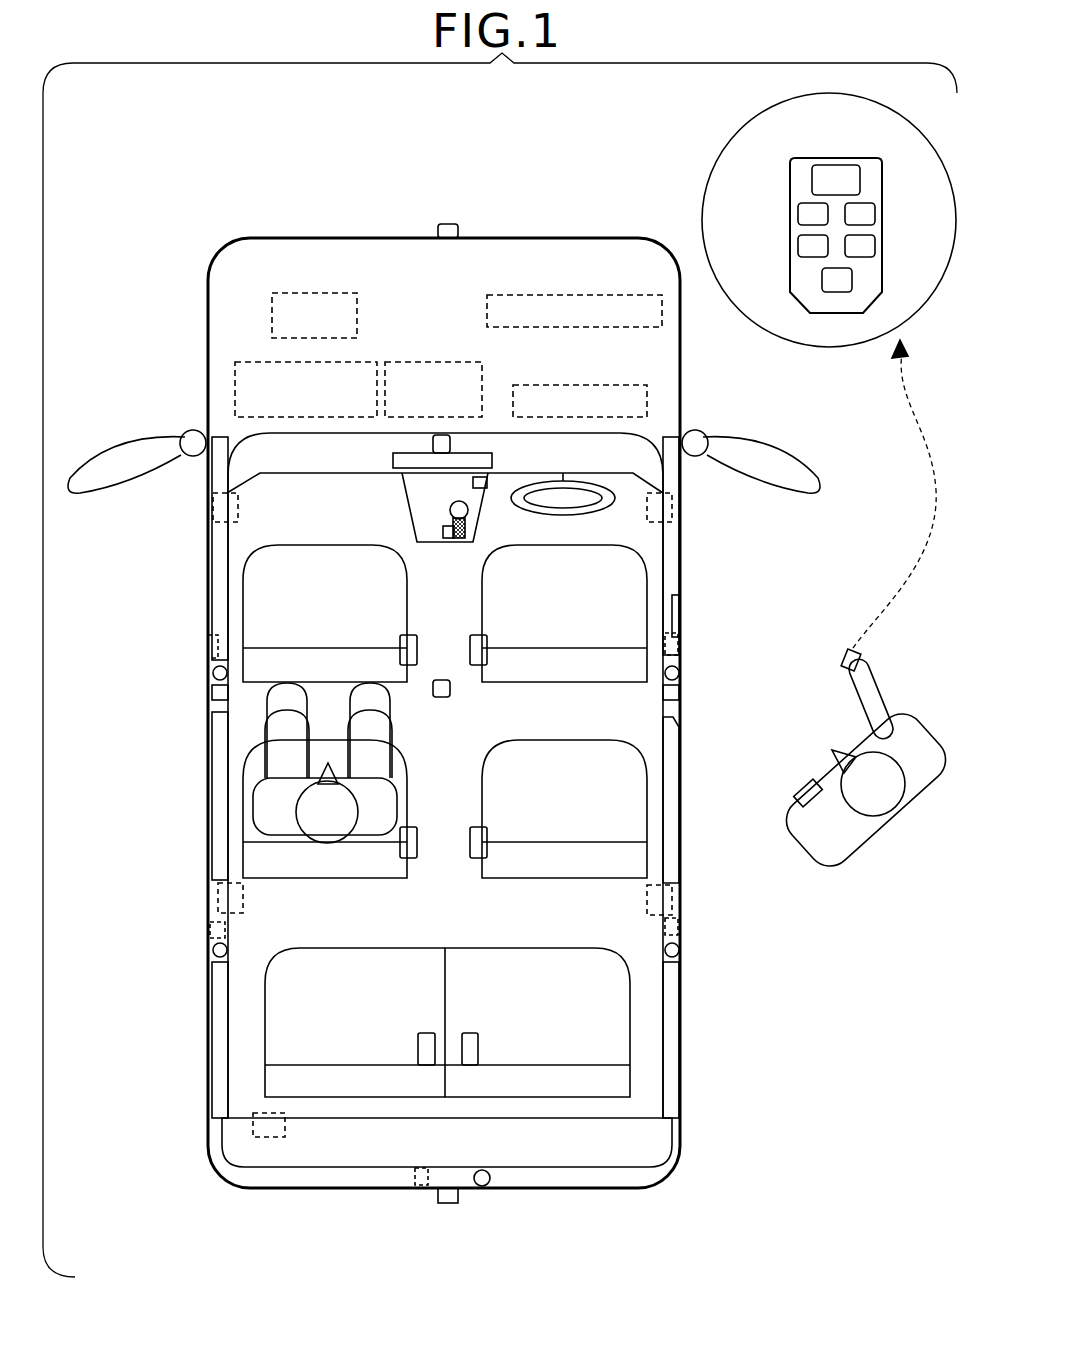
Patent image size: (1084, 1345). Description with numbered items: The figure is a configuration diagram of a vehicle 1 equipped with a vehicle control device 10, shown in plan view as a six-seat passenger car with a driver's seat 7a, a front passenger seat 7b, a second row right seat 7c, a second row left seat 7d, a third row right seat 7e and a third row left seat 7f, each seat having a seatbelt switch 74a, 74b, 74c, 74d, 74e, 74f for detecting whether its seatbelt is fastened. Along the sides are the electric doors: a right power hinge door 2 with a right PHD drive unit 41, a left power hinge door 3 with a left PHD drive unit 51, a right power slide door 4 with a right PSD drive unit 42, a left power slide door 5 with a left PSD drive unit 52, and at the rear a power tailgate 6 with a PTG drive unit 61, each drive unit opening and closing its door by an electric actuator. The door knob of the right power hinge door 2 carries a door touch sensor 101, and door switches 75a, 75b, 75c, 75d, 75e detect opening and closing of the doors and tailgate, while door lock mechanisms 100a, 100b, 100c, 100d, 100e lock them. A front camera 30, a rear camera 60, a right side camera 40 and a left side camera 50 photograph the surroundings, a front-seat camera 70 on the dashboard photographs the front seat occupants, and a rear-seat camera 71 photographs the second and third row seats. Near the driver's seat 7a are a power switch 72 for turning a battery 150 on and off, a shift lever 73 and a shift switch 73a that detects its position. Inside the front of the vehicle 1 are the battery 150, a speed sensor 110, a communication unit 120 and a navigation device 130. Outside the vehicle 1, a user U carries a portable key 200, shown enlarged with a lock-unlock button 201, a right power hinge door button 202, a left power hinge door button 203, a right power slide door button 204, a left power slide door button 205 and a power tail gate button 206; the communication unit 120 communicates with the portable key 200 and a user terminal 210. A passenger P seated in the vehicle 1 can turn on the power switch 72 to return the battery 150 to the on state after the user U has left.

The vehicle 1 is at (560, 238).
The right power hinge door 2 is at (679, 583).
The left power hinge door 3 is at (212, 578).
The right power slide door 4 is at (679, 840).
The left power slide door 5 is at (212, 815).
The power tailgate 6 is at (625, 1165).
The driver's seat 7a is at (482, 622).
The front passenger seat 7b is at (407, 592).
The second row right seat 7c is at (482, 790).
The second row left seat 7d is at (407, 763).
The third row right seat 7e is at (520, 947).
The third row left seat 7f is at (375, 947).
The vehicle control device 10 is at (235, 387).
The front camera 30 is at (448, 224).
The right side camera 40 is at (679, 692).
The right PHD drive unit 41 is at (672, 507).
The right PSD drive unit 42 is at (672, 898).
The left side camera 50 is at (212, 690).
The left PHD drive unit 51 is at (213, 507).
The left PSD drive unit 52 is at (218, 905).
The rear camera 60 is at (448, 1203).
The PTG drive unit 61 is at (268, 1137).
The front-seat camera 70 is at (450, 447).
The rear-seat camera 71 is at (443, 697).
The power switch 72 is at (482, 488).
The shift lever 73 is at (450, 512).
The shift switch 73a is at (443, 533).
The seatbelt switch 74a is at (478, 665).
The seatbelt switch 74b is at (410, 665).
The seatbelt switch 74c is at (478, 858).
The seatbelt switch 74d is at (410, 858).
The seatbelt switch 74e is at (478, 1055).
The seatbelt switch 74f is at (418, 1055).
The door switch 75a is at (679, 673).
The door switch 75b is at (213, 673).
The door switch 75c is at (679, 955).
The door switch 75d is at (215, 956).
The door switch 75e is at (485, 1186).
The door lock mechanism 100a is at (678, 648).
The door lock mechanism 100b is at (208, 648).
The door lock mechanism 100c is at (678, 930).
The door lock mechanism 100d is at (210, 930).
The door lock mechanism 100e is at (420, 1185).
The door touch sensor 101 is at (679, 612).
The speed sensor 110 is at (575, 385).
The communication unit 120 is at (572, 295).
The navigation device 130 is at (436, 362).
The battery 150 is at (315, 293).
The portable key 200 is at (833, 158).
The lock-unlock button 201 is at (812, 180).
The right power hinge door button 202 is at (875, 216).
The left power hinge door button 203 is at (798, 213).
The right power slide door button 204 is at (875, 248).
The left power slide door button 205 is at (798, 246).
The power tail gate button 206 is at (822, 280).
The user terminal 210 is at (796, 784).
The passenger P is at (330, 824).
The user U is at (893, 816).